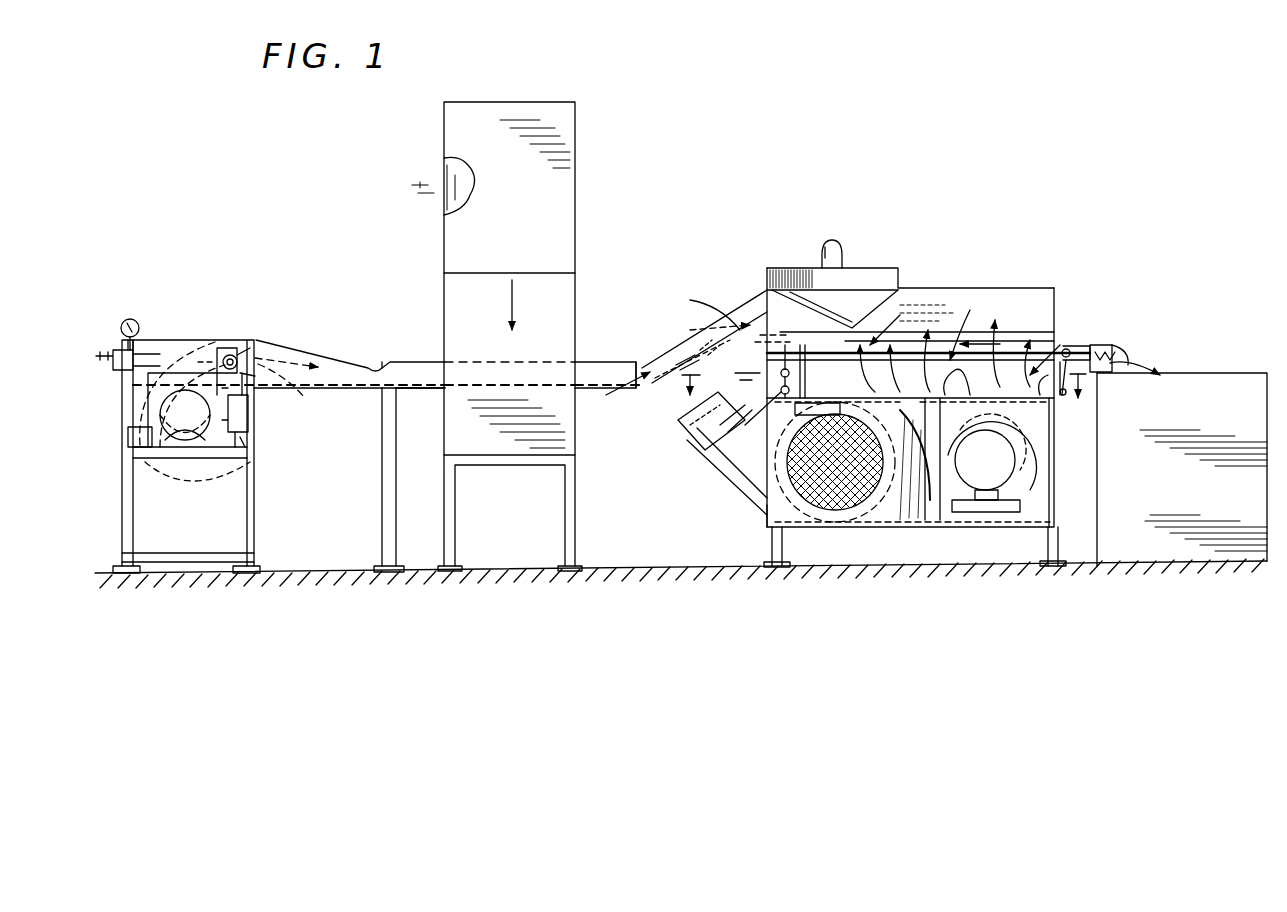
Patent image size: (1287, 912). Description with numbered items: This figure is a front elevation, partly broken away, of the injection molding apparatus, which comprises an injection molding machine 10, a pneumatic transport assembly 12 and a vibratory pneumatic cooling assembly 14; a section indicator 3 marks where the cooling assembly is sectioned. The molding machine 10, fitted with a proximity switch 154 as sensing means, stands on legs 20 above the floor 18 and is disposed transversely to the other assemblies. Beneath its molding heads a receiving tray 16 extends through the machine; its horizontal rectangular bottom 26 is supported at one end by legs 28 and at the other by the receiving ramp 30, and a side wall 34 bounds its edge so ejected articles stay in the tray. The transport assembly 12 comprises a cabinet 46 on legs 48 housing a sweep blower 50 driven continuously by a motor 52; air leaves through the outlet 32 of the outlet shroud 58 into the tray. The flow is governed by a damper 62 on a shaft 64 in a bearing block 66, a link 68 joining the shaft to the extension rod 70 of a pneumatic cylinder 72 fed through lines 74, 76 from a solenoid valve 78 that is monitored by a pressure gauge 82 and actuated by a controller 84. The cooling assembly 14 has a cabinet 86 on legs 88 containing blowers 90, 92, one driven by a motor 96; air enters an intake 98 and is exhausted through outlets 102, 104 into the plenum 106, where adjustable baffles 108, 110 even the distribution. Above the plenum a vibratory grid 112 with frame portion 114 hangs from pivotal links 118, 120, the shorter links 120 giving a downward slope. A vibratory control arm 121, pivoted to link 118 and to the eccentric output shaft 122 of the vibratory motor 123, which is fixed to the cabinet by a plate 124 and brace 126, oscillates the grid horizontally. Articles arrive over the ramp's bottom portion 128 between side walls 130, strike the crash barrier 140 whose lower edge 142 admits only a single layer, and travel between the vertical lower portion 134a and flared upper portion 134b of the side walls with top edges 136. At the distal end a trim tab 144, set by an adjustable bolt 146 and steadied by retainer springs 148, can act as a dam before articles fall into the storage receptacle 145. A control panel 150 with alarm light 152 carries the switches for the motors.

The injection molding machine 10 is at (521, 325).
The pneumatic transport assembly 12 is at (233, 440).
The vibratory pneumatic cooling assembly 14 is at (930, 408).
The receiving tray 16 is at (389, 432).
The floor 18 is at (520, 566).
The legs 20 is at (565, 493).
The bottom 26 is at (435, 388).
The legs 28 is at (382, 466).
The receiving ramp 30 is at (622, 400).
The outlet 32 is at (375, 368).
The side wall 34 is at (590, 360).
The cabinet 46 is at (160, 340).
The legs 48 is at (130, 572).
The sweep blower 50 is at (202, 345).
The motor 52 is at (196, 462).
The outlet shroud 58 is at (300, 352).
The damper 62 is at (306, 400).
The shaft 64 is at (237, 358).
The bearing block 66 is at (230, 348).
The link 68 is at (250, 350).
The extension rod 70 is at (248, 400).
The pneumatic cylinder 72 is at (258, 432).
The line 74 is at (212, 398).
The line 76 is at (207, 430).
The solenoid valve 78 is at (133, 368).
The pressure gauge 82 is at (140, 318).
The controller 84 is at (112, 352).
The cabinet 86 is at (1060, 512).
The legs 88 is at (770, 550).
The blower 90 is at (820, 522).
The blower 92 is at (945, 512).
The motor 96 is at (1050, 470).
The intake 98 is at (727, 463).
The outlet 102 is at (965, 463).
The outlet 104 is at (986, 470).
The plenum 106 is at (780, 440).
The baffle 108 is at (905, 345).
The baffle 110 is at (950, 330).
The vibratory grid 112 is at (1040, 345).
The frame portion 114 is at (1085, 348).
The links 118 is at (735, 325).
The links 120 is at (1066, 400).
The vibratory control arm 121 is at (775, 368).
The output shaft 122 is at (770, 410).
The vibratory motor 123 is at (690, 425).
The plate 124 is at (713, 455).
The brace 126 is at (758, 520).
The bottom portion 128 is at (700, 338).
The side walls 130 is at (745, 302).
The lower portion 134a is at (1000, 345).
The upper portion 134b is at (990, 300).
The top edges 136 is at (970, 300).
The crash barrier 140 is at (860, 325).
The lower edge 142 is at (905, 295).
The trim tab 144 is at (1112, 355).
The storage receptacle 145 is at (1182, 467).
The adjustable bolt 146 is at (1120, 370).
The retainer springs 148 is at (1100, 378).
The control panel 150 is at (848, 272).
The alarm light 152 is at (826, 240).
The proximity switch 154 is at (462, 200).
The section line 3 is at (687, 390).